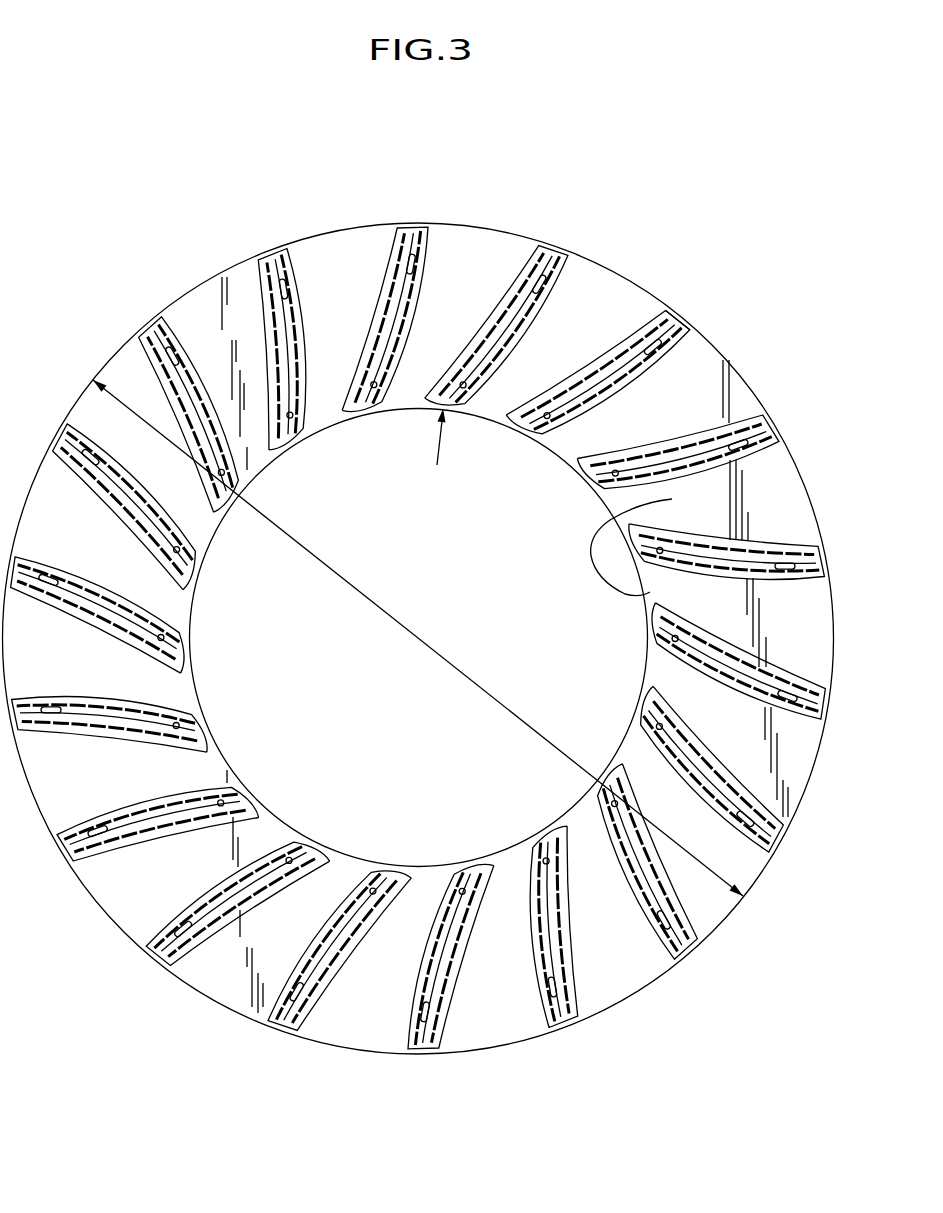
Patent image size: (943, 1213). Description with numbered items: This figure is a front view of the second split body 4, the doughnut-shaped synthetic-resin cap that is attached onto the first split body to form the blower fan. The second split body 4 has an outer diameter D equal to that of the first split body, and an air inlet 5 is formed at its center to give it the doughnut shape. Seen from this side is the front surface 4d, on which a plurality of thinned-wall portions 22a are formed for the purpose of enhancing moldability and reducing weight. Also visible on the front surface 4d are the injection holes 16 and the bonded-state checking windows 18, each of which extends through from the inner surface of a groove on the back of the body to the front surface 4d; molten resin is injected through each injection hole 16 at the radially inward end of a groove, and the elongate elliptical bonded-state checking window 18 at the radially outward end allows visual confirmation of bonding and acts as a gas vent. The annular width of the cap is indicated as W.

The second split body 4 is at (603, 205).
The front surface 4d is at (215, 295).
The annular width W is at (467, 226).
The injection hole 16 is at (610, 326).
The bonded-state checking window 18 is at (670, 335).
The thinned-wall portion 22a is at (687, 441).
The air inlet 5 is at (672, 499).
The outer diameter D is at (418, 638).